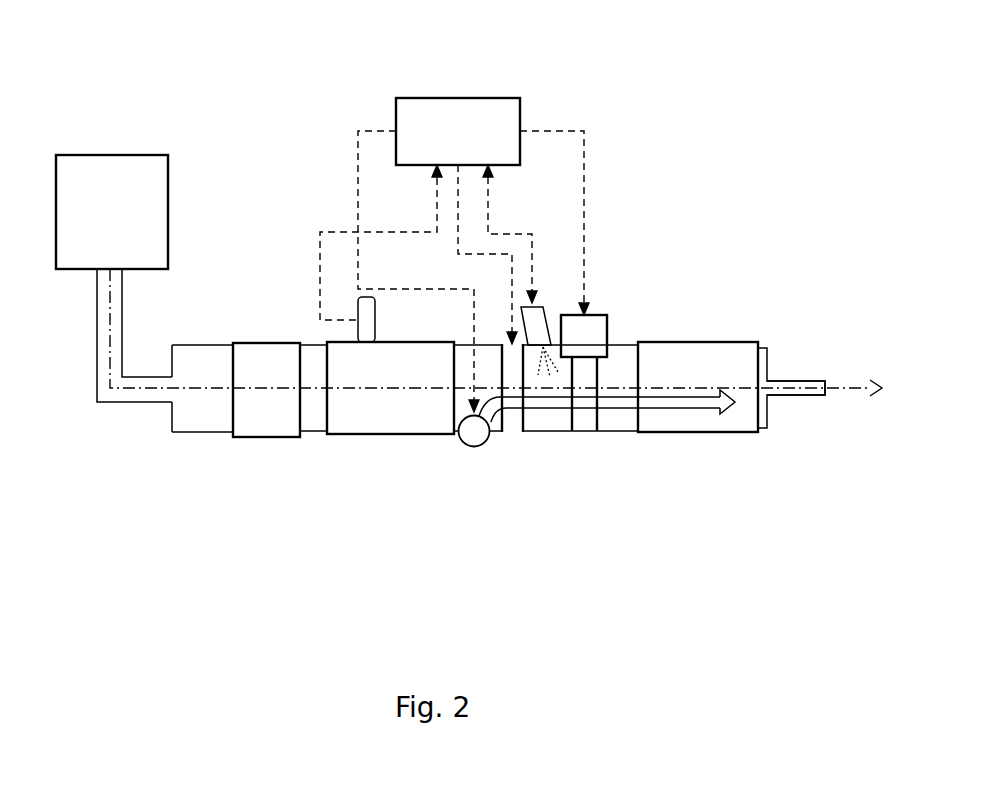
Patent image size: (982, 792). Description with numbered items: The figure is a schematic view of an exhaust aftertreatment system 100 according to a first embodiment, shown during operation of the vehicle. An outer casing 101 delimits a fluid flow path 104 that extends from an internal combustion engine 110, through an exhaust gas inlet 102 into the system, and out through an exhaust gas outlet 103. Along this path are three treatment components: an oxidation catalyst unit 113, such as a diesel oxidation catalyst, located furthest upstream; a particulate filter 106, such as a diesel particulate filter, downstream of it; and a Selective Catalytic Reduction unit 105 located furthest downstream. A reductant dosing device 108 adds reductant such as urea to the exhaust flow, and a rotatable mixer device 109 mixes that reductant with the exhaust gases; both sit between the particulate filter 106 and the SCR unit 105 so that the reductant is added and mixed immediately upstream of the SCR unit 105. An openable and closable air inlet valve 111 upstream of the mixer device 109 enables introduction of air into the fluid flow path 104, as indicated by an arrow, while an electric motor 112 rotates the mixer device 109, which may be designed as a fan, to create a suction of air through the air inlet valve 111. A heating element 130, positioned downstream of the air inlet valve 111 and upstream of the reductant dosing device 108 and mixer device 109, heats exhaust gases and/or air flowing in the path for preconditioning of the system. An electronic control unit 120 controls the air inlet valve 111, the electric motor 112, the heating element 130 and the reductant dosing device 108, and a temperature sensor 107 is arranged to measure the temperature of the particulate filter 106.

The exhaust aftertreatment system 100 is at (183, 536).
The outer casing 101 is at (222, 345).
The exhaust gas inlet 102 is at (102, 273).
The exhaust gas outlet 103 is at (823, 382).
The fluid flow path 104 is at (158, 397).
The Selective Catalytic Reduction unit 105 is at (703, 420).
The particulate filter 106 is at (387, 415).
The temperature sensor 107 is at (365, 295).
The reductant dosing device 108 is at (535, 317).
The rotatable mixer device 109 is at (585, 425).
The internal combustion engine 110 is at (145, 153).
The air inlet valve 111 is at (473, 442).
The electric motor 112 is at (593, 325).
The oxidation catalyst unit 113 is at (248, 415).
The electronic control unit 120 is at (483, 108).
The heating element 130 is at (508, 427).